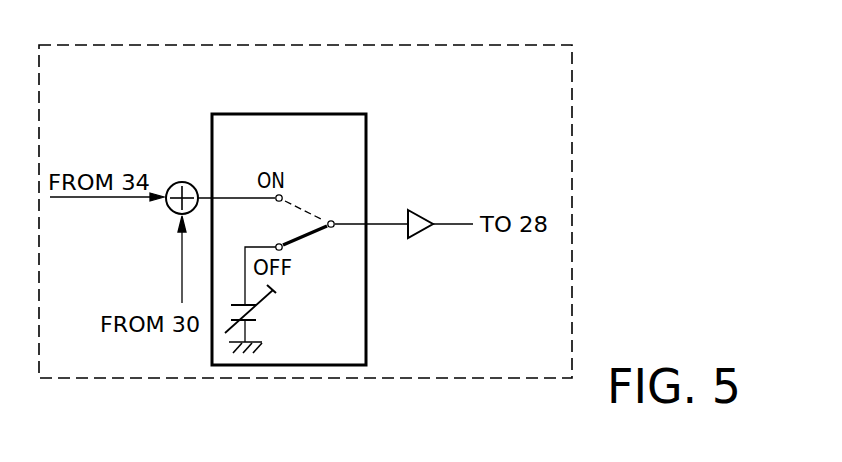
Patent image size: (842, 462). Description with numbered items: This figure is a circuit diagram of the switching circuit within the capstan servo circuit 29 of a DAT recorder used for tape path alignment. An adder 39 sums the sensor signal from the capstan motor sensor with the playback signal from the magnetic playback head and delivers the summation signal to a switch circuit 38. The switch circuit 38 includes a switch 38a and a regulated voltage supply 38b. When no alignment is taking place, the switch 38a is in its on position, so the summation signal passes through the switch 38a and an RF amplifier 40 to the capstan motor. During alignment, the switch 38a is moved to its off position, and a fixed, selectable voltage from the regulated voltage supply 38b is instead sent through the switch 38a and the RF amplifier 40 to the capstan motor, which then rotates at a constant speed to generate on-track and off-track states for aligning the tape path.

The capstan servo circuit 29 is at (366, 45).
The switch circuit 38 is at (268, 114).
The switch 38a is at (300, 212).
The regulated voltage supply 38b is at (258, 319).
The adder 39 is at (173, 186).
The RF amplifier 40 is at (423, 218).